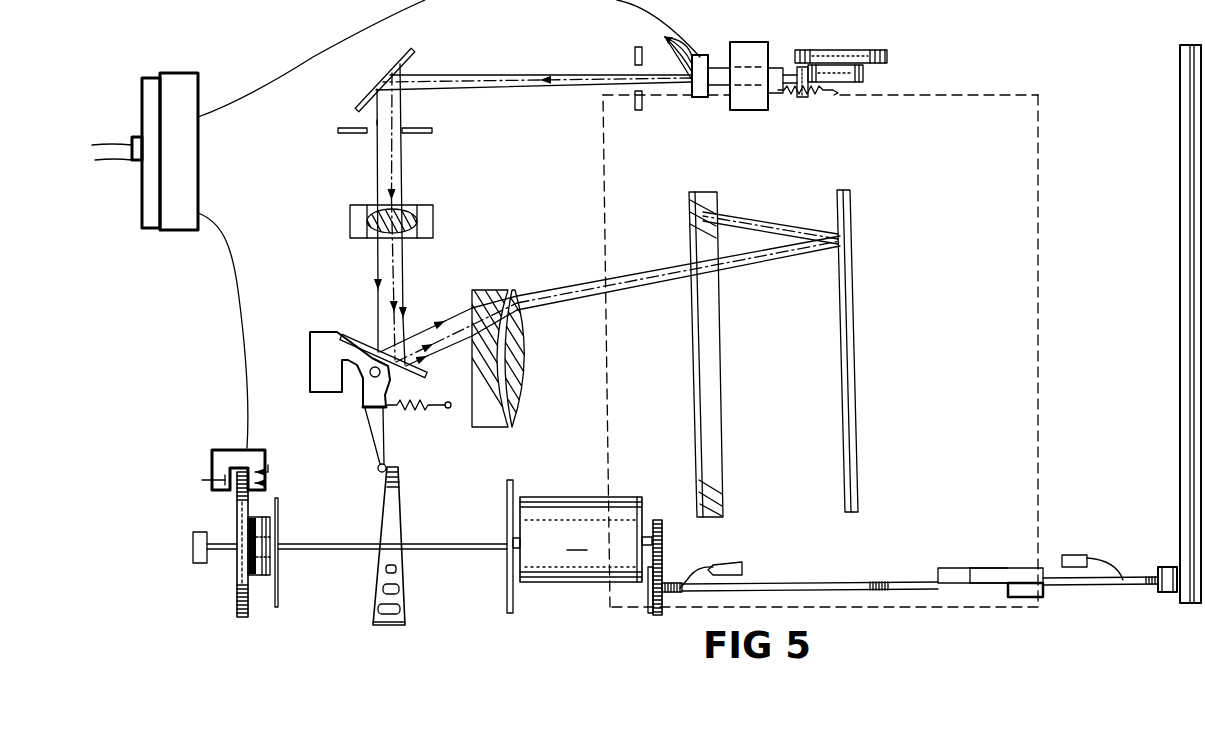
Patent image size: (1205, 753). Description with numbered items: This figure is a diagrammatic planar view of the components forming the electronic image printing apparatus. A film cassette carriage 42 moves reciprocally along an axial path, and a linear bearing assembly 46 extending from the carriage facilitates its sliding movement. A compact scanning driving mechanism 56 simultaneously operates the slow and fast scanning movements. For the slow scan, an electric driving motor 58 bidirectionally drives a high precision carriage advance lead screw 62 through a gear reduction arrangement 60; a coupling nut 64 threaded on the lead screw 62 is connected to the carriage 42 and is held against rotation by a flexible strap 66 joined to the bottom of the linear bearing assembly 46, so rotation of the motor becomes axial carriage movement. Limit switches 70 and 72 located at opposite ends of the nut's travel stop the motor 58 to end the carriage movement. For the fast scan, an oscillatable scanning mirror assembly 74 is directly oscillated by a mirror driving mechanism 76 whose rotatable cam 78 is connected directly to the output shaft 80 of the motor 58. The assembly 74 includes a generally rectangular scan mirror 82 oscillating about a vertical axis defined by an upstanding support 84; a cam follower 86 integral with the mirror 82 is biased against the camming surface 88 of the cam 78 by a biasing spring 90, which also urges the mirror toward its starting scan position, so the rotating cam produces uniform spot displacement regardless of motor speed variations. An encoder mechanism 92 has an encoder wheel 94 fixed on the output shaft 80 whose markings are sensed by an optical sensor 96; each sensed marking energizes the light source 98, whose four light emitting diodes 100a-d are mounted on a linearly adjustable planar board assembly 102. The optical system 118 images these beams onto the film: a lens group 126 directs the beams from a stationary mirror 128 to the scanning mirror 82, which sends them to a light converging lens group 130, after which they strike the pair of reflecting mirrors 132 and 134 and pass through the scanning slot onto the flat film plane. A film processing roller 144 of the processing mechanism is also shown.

The film cassette carriage 42 is at (950, 112).
The linear bearing assembly 46 is at (940, 570).
The scanning driving mechanism 56 is at (648, 412).
The electric driving motor 58 is at (551, 496).
The gear reduction arrangement 60 is at (639, 620).
The carriage advance lead screw 62 is at (834, 582).
The coupling nut 64 is at (1027, 603).
The flexible strap 66 is at (995, 580).
The limit switch 70 is at (742, 564).
The limit switch 72 is at (1073, 556).
The scanning mirror assembly 74 is at (353, 373).
The mirror driving mechanism 76 is at (356, 578).
The rotatable cam 78 is at (394, 513).
The output shaft 80 is at (469, 541).
The scan mirror 82 is at (366, 346).
The upstanding support 84 is at (306, 336).
The cam follower 86 is at (378, 474).
The camming surface 88 is at (383, 508).
The biasing spring 90 is at (417, 419).
The encoder mechanism 92 is at (210, 512).
The encoder wheel 94 is at (237, 603).
The optical sensor 96 is at (230, 456).
The light source 98 is at (742, 69).
The light emitting diodes 100a-d is at (645, 67).
The planar board assembly 102 is at (700, 98).
The optical system 118 is at (366, 176).
The lens group 126 is at (438, 212).
The stationary mirror 128 is at (413, 52).
The light converging lens group 130 is at (476, 290).
The reflecting mirror 132 is at (696, 193).
The reflecting mirror 134 is at (846, 190).
The film processing roller 144 is at (1180, 292).